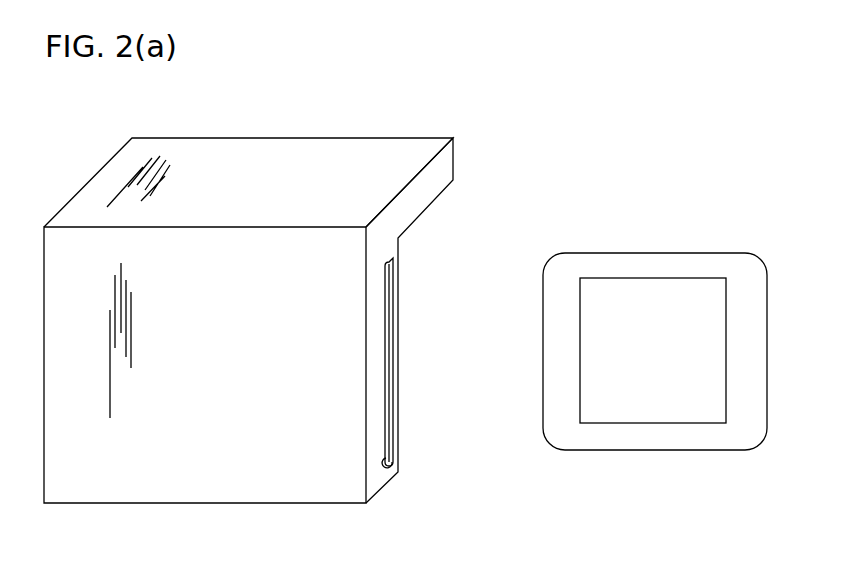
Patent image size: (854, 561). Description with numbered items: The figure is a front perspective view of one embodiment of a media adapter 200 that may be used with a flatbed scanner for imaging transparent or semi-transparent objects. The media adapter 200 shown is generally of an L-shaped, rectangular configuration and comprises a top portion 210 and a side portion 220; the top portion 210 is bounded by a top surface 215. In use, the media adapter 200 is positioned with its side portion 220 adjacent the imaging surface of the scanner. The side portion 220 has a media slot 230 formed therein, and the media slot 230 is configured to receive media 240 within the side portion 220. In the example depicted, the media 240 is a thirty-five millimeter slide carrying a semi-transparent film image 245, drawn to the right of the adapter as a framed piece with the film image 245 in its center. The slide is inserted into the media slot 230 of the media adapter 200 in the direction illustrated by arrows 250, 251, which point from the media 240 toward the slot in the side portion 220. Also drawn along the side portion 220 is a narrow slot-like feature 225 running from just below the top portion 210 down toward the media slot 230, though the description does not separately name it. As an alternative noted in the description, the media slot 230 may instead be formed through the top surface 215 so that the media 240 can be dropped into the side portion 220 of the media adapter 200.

The media adapter 200 is at (467, 107).
The top portion 210 is at (453, 166).
The top surface 215 is at (298, 208).
The side portion 220 is at (245, 503).
The slot 225 is at (399, 355).
The media slot 230 is at (391, 470).
The media 240 is at (592, 450).
The semi-transparent film image 245 is at (675, 364).
The arrow 250 is at (432, 267).
The arrow 251 is at (427, 449).